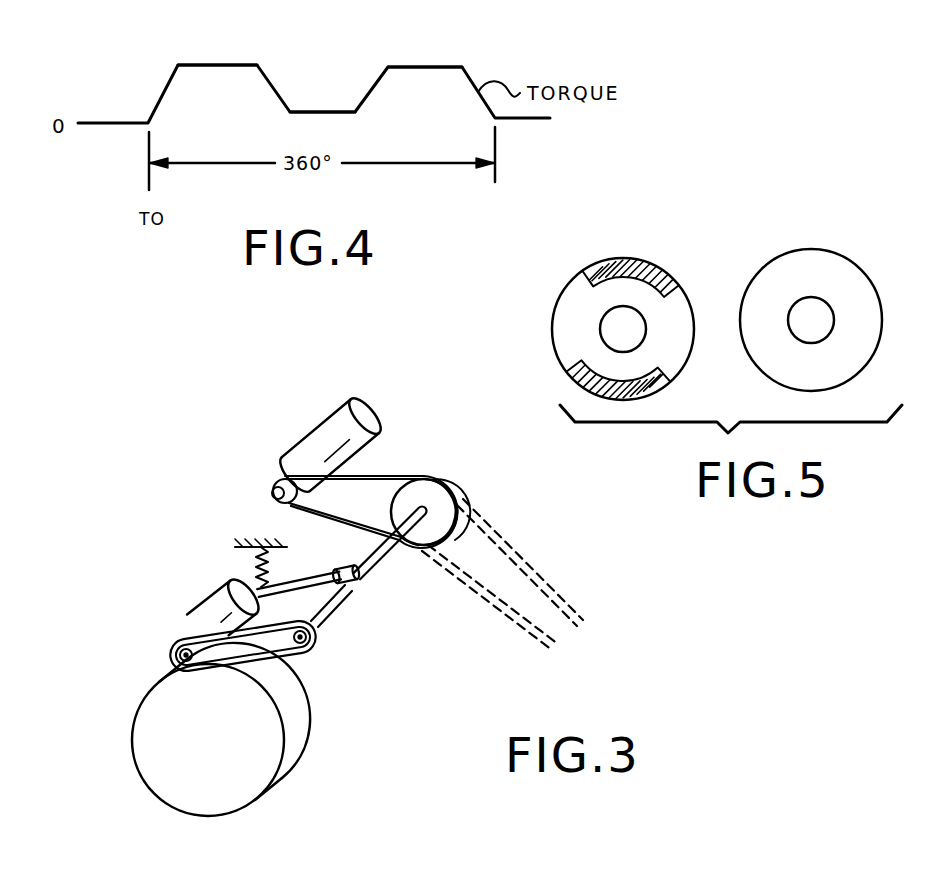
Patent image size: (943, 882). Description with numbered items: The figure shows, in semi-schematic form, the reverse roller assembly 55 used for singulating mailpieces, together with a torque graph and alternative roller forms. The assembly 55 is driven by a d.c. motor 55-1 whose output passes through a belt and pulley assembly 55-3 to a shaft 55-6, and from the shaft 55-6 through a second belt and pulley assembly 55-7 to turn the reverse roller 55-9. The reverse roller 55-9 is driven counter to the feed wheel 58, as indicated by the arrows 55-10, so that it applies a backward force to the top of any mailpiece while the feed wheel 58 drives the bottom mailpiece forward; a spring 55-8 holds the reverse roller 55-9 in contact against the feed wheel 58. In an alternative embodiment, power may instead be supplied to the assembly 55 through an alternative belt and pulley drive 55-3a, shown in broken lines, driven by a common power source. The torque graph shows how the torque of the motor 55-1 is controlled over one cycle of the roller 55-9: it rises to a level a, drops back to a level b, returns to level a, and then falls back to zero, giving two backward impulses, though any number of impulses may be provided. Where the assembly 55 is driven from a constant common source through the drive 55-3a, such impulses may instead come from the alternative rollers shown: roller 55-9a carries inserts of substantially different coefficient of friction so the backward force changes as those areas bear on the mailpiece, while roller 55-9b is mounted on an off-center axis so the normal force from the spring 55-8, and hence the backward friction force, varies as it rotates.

In FIG. 4, the torque level a is at (203, 63).
In FIG. 4, the torque level b is at (315, 110).
In FIG. 3, the reverse roller assembly 55 is at (146, 584).
In FIG. 3, the d.c. motor 55-1 is at (313, 428).
In FIG. 3, the belt and pulley assembly 55-3 is at (433, 490).
In FIG. 3, the alternative belt and pulley drive 55-3a is at (541, 577).
In FIG. 3, the shaft 55-6 is at (392, 558).
In FIG. 3, the second belt and pulley assembly 55-7 is at (325, 692).
In FIG. 3, the spring 55-8 is at (253, 566).
In FIG. 3, the reverse roller 55-9 is at (210, 597).
In FIG. 5, the reverse roller with inserts 55-9a is at (683, 292).
In FIG. 5, the off-center reverse roller 55-9b is at (862, 267).
In FIG. 3, the arrows 55-10 is at (160, 623).
In FIG. 3, the feed wheel 58 is at (260, 788).